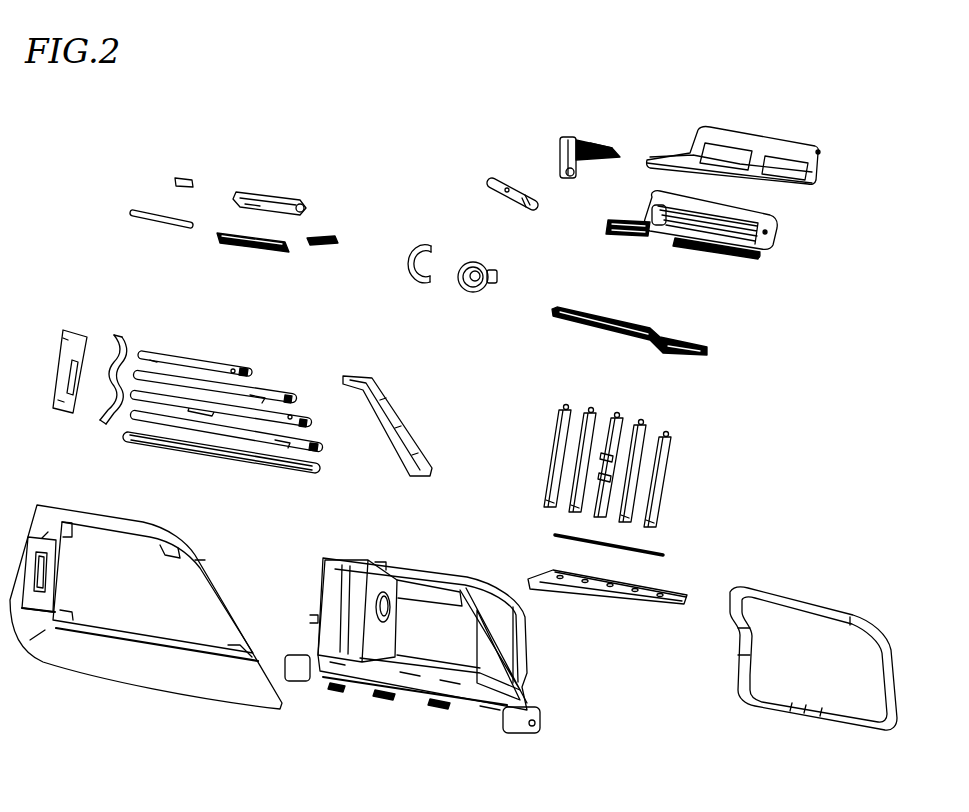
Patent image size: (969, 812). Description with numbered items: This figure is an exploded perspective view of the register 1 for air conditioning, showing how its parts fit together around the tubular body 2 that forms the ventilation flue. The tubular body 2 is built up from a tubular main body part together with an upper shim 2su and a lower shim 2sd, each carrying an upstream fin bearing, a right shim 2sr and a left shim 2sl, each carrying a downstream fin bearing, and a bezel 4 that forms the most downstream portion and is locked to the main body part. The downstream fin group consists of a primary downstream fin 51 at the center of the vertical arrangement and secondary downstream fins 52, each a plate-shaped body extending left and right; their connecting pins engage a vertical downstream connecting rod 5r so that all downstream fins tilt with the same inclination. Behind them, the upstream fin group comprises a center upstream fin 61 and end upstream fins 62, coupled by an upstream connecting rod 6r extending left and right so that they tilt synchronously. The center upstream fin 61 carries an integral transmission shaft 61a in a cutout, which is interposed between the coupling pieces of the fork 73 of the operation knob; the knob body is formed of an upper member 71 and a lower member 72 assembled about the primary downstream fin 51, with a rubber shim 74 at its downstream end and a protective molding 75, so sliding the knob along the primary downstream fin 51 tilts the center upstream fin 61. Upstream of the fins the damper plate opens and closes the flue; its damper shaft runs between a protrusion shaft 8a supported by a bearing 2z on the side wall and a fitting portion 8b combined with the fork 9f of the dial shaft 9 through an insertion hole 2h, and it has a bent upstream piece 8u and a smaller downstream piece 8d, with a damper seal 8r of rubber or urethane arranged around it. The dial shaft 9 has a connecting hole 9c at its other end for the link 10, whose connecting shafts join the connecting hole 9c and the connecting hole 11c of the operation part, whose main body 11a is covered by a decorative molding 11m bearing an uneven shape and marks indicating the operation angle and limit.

The register 1 is at (123, 563).
The tubular body 2 is at (362, 577).
The insertion hole 2h is at (400, 620).
The bearing 2z is at (540, 652).
The lower shim 2sd is at (666, 596).
The left shim 2sl is at (63, 333).
The right shim 2sr is at (410, 423).
The upper shim 2su is at (680, 333).
The bezel 4 is at (75, 515).
The downstream connecting rod 5r is at (117, 334).
The upstream connecting rod 6r is at (663, 553).
The protrusion shaft 8a is at (758, 258).
The fitting portion 8b is at (625, 218).
The downstream piece 8d is at (700, 252).
The damper seal 8r is at (819, 152).
The upstream piece 8u is at (768, 231).
The dial shaft 9 is at (572, 140).
The connecting hole 9c is at (580, 173).
The fork 9f is at (612, 152).
The link 10 is at (508, 186).
The main body 11a is at (463, 293).
The connecting hole 11c is at (497, 274).
The decorative molding 11m is at (408, 261).
The primary downstream fin 51 is at (291, 417).
The secondary downstream fins 52 is at (234, 370).
The center upstream fin 61 is at (616, 415).
The transmission shaft 61a is at (600, 467).
The end upstream fins 62 is at (690, 420).
The upper member 71 is at (280, 202).
The lower member 72 is at (263, 252).
The fork 73 is at (330, 237).
The rubber shim 74 is at (178, 178).
The protective molding 75 is at (147, 215).